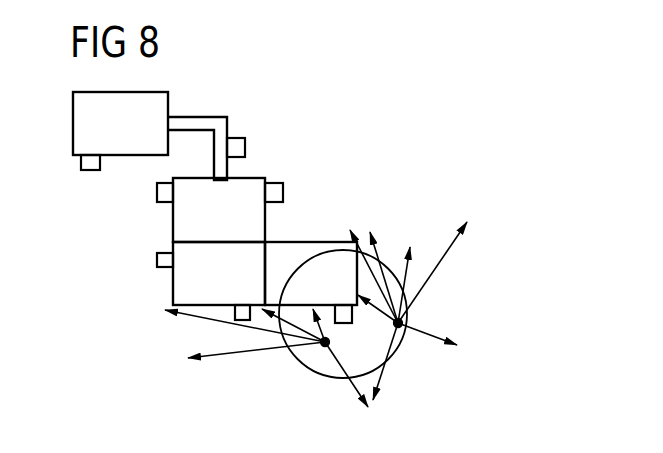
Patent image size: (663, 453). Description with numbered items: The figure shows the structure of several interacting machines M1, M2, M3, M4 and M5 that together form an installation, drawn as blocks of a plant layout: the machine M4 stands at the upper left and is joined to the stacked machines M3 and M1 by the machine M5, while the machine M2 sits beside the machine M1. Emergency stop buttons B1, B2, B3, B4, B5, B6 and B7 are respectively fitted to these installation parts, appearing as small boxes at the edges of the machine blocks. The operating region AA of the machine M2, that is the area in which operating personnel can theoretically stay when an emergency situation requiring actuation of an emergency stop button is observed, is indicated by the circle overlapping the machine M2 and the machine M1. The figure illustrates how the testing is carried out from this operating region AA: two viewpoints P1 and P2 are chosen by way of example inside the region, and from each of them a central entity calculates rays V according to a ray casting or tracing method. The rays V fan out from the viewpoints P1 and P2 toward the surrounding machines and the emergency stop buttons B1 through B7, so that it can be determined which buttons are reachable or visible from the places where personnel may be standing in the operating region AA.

The machine M1 is at (219, 273).
The machine M2 is at (311, 273).
The machine M3 is at (219, 210).
The machine M4 is at (120, 123).
The machine M5 is at (207, 123).
The emergency stop button B1 is at (237, 320).
The emergency stop button B2 is at (158, 266).
The emergency stop button B3 is at (283, 195).
The emergency stop button B4 is at (89, 171).
The emergency stop button B5 is at (343, 328).
The emergency stop button B6 is at (157, 193).
The emergency stop button B7 is at (245, 150).
The viewpoint P1 is at (301, 360).
The viewpoint P2 is at (403, 323).
The ray V is at (445, 257).
The operating region AA is at (401, 355).